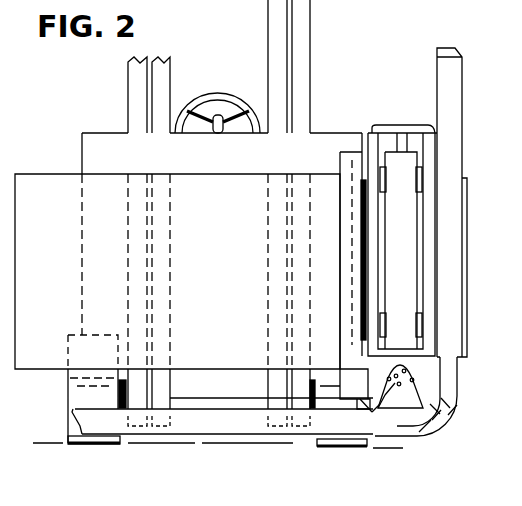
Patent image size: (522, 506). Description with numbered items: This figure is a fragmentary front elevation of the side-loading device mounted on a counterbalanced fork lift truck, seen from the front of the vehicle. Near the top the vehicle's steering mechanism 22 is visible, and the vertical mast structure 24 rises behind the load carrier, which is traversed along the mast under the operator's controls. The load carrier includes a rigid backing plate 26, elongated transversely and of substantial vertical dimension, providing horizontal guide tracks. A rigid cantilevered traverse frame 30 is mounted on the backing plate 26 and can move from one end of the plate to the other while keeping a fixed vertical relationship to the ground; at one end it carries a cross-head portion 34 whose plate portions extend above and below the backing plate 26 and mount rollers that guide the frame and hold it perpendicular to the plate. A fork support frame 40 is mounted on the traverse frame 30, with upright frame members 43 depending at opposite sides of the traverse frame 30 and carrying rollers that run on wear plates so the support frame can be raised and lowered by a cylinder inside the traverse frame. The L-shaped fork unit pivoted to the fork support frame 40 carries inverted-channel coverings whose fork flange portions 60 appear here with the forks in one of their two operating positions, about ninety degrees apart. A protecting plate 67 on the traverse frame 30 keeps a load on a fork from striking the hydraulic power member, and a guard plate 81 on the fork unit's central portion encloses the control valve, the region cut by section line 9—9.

The section line 9— 9 is at (416, 279).
The steering mechanism 22 is at (218, 93).
The vertical mast structure 24 is at (303, 18).
The backing plate 26 is at (39, 174).
The traverse frame 30 is at (405, 163).
The cross-head portion 34 is at (345, 152).
The fork support frame 40 is at (385, 118).
The upright frame members 43 is at (428, 220).
The fork flange portions 60 is at (511, 86).
The protecting plate 67 is at (365, 244).
The guard plate 81 is at (447, 421).